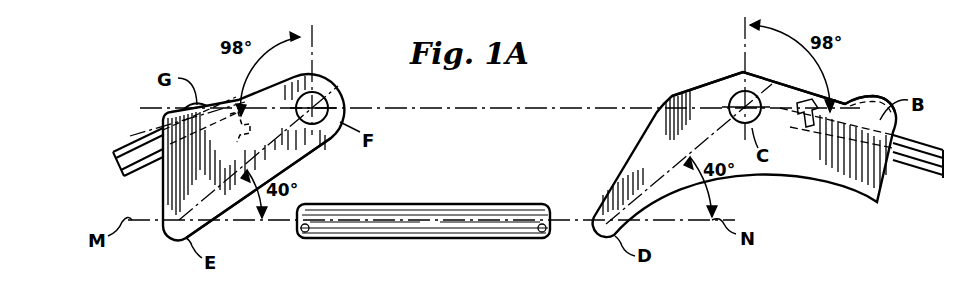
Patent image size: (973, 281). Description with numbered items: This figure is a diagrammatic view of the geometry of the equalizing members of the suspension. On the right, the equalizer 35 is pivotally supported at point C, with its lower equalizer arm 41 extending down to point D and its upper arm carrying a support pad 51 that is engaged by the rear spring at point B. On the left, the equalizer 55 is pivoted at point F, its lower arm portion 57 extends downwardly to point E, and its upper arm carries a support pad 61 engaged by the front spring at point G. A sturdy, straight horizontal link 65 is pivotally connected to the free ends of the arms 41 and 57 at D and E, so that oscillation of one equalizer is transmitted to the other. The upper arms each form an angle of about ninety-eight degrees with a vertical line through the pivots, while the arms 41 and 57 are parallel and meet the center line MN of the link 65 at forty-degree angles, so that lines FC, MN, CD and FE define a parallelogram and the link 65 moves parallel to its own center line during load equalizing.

The equalizer 35 is at (683, 90).
The lower equalizer arm 41 is at (654, 134).
The support pad 51 is at (863, 104).
The equalizer 55 is at (160, 192).
The lower arm portion 57 is at (272, 163).
The support pad 61 is at (176, 108).
The horizontal link 65 is at (386, 230).